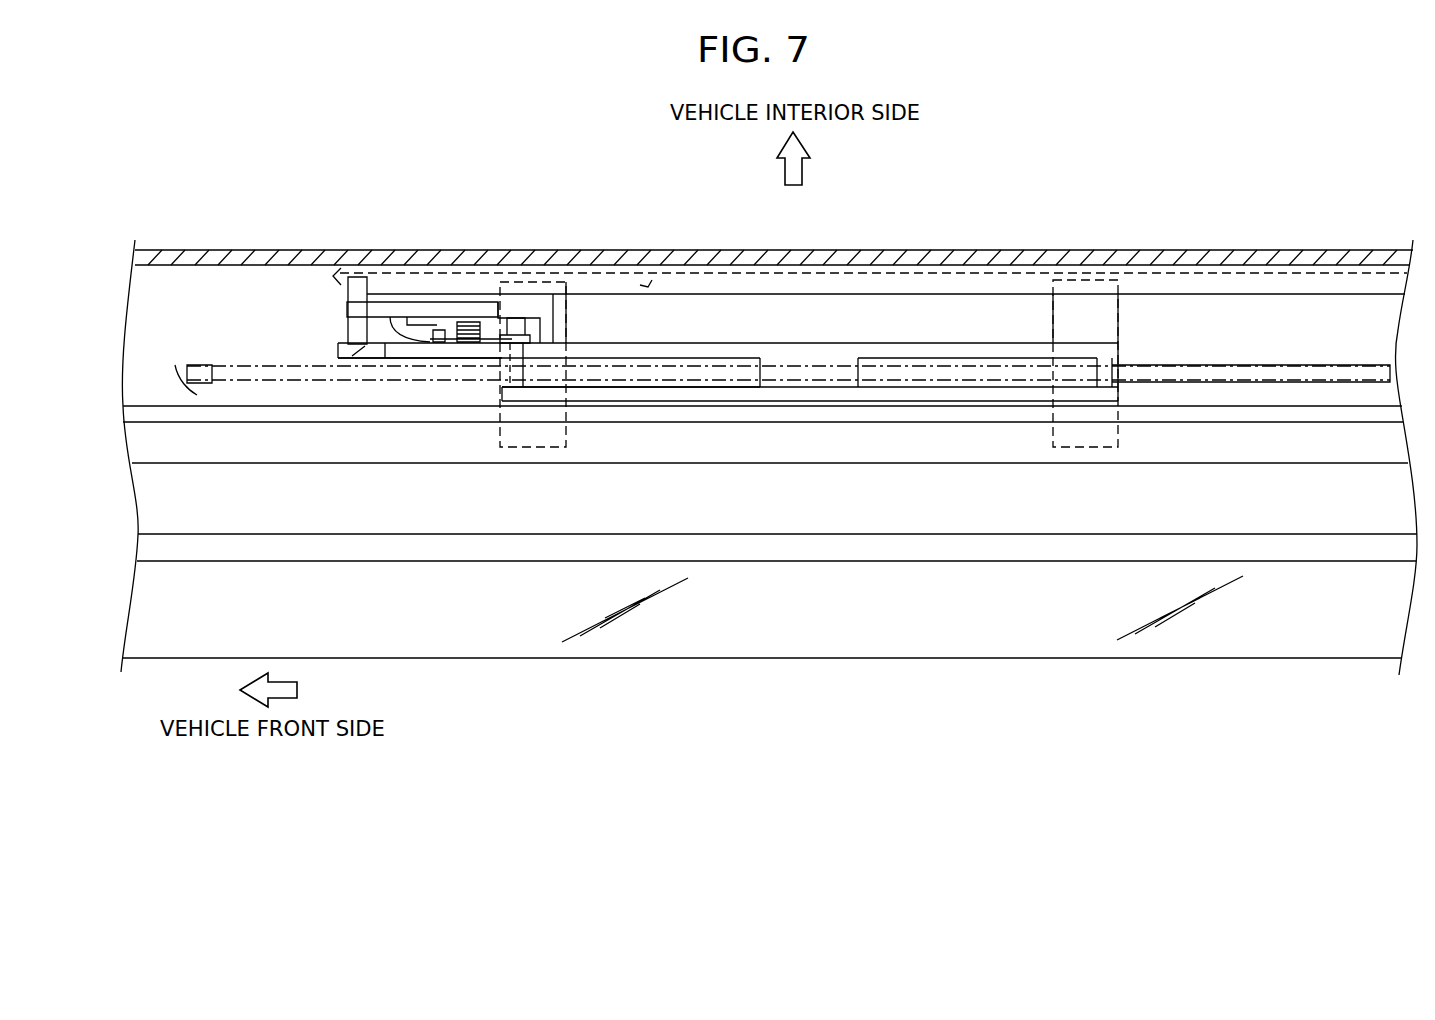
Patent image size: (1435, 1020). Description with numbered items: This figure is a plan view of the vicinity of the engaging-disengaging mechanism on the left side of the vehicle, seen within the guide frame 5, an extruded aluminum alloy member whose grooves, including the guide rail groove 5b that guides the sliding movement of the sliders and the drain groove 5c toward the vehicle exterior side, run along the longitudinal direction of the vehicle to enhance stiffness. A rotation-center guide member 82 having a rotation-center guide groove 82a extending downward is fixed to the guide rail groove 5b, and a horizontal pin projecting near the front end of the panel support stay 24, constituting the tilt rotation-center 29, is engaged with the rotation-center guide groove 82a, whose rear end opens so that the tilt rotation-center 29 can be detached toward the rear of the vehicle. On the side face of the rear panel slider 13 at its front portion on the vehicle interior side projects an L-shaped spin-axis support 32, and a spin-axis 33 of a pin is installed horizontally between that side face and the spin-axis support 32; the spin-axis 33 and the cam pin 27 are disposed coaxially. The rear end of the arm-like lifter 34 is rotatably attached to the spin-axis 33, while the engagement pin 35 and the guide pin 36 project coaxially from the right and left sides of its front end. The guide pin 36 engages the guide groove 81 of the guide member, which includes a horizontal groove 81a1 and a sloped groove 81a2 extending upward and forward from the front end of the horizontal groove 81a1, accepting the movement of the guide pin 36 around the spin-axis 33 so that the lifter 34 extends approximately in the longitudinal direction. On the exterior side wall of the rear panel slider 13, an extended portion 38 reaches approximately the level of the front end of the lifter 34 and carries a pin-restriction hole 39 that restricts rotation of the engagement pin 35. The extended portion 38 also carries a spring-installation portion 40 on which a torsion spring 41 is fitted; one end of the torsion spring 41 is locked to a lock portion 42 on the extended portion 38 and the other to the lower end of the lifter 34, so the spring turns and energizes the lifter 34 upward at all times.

The guide frame 5 is at (824, 681).
The guide rail groove 5b is at (1193, 357).
The drain groove 5c is at (1280, 502).
The rear panel slider 13 is at (813, 343).
The panel support stay 24 is at (1298, 365).
The cam pin 27 is at (508, 370).
The tilt rotation-center 29 is at (176, 363).
The spin-axis support 32 is at (535, 300).
The spin-axis 33 is at (505, 315).
The lifter 34 is at (453, 313).
The engagement pin 35 is at (348, 330).
The guide pin 36 is at (350, 277).
The extended portion 38 is at (398, 347).
The pin-restriction hole 39 is at (358, 353).
The spring-installation portion 40 is at (478, 296).
The torsion spring 41 is at (437, 324).
The lock portion 42 is at (390, 322).
The guide groove 81 is at (737, 285).
The horizontal groove 81a1 is at (648, 286).
The sloped groove 81a2 is at (380, 287).
The rotation-center guide member 82 is at (165, 387).
The rotation-center guide groove 82a is at (248, 397).